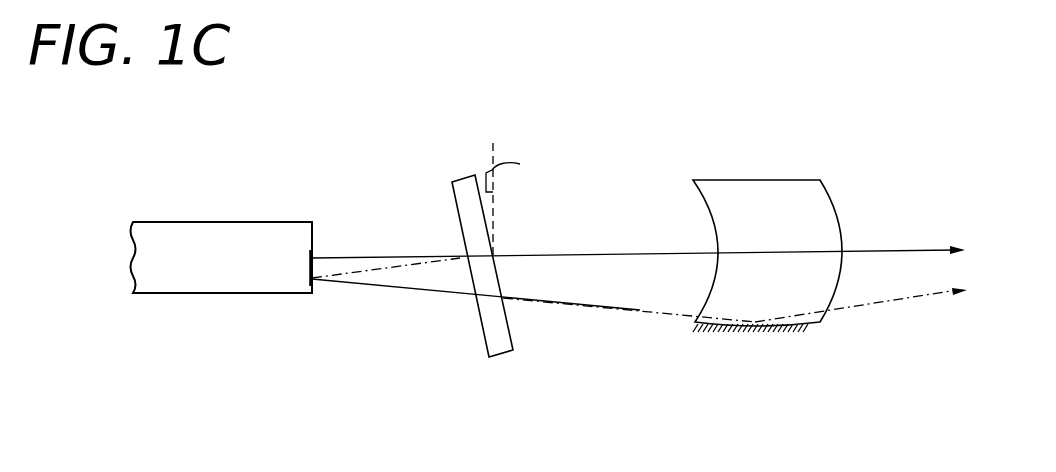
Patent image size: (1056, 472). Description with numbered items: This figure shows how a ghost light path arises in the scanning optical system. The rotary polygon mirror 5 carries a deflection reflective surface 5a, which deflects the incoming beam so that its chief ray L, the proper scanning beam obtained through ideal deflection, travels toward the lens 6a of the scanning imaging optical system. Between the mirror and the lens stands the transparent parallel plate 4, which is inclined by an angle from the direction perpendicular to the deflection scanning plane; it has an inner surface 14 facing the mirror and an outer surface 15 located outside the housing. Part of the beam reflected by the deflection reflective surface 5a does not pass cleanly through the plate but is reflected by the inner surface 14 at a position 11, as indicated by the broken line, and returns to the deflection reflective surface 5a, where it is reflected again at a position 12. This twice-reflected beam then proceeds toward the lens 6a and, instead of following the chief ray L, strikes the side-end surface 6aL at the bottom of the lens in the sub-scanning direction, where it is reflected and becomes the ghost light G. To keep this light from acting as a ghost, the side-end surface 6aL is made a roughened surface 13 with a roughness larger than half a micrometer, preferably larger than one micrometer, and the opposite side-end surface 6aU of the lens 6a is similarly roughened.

The rotary polygon mirror 5 is at (208, 232).
The deflection reflective surface 5a is at (312, 240).
The position 12 is at (321, 292).
The transparent parallel plate 4 is at (466, 182).
The position 11 is at (455, 247).
The inner surface 14 is at (480, 322).
The outer surface 15 is at (513, 328).
The lens 6a is at (800, 187).
The side-end surface 6aU is at (720, 178).
The side-end surface 6aL is at (800, 333).
The roughened surface 13 is at (763, 333).
The chief ray L is at (646, 251).
The ghost light G is at (748, 301).